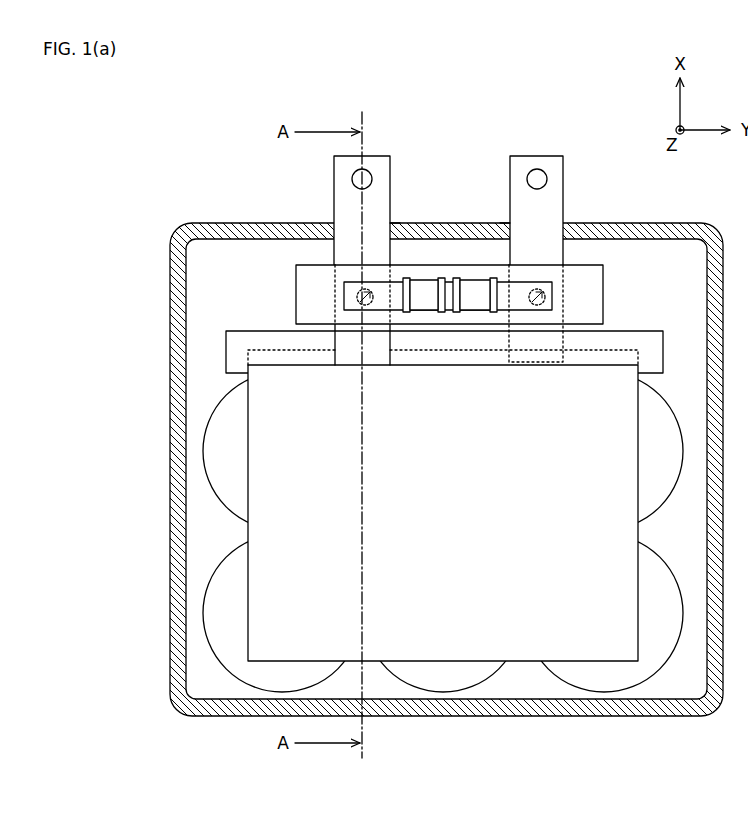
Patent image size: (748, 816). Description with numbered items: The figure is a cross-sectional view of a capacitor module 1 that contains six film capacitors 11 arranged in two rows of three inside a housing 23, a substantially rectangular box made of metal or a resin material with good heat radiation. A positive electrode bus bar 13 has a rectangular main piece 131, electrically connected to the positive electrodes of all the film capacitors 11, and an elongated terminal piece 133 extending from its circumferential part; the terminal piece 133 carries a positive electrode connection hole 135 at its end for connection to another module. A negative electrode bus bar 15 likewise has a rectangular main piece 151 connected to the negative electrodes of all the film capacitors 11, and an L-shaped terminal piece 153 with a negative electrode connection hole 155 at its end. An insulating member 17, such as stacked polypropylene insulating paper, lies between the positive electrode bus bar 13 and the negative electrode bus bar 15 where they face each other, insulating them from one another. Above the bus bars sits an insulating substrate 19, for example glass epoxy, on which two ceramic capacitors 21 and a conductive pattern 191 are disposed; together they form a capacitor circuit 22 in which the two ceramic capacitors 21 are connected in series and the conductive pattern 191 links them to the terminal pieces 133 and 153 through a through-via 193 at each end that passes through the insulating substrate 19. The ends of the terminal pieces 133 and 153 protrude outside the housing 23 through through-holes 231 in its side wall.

The capacitor module 1 is at (192, 216).
The film capacitor 11 is at (462, 676).
The positive electrode bus bar 13 is at (302, 255).
The main piece 131 is at (352, 382).
The terminal piece 133 is at (341, 226).
The positive electrode connection hole 135 is at (352, 177).
The negative electrode bus bar 15 is at (581, 231).
The main piece 151 is at (618, 350).
The terminal piece 153 is at (550, 220).
The negative electrode connection hole 155 is at (538, 169).
The insulating member 17 is at (650, 331).
The insulating substrate 19 is at (297, 309).
The conductive pattern 191 is at (517, 293).
The through-via 193 is at (390, 327).
The ceramic capacitor 21 is at (472, 293).
The capacitor circuit 22 is at (448, 210).
The through-hole 231 is at (395, 221).
The housing 23 is at (679, 716).